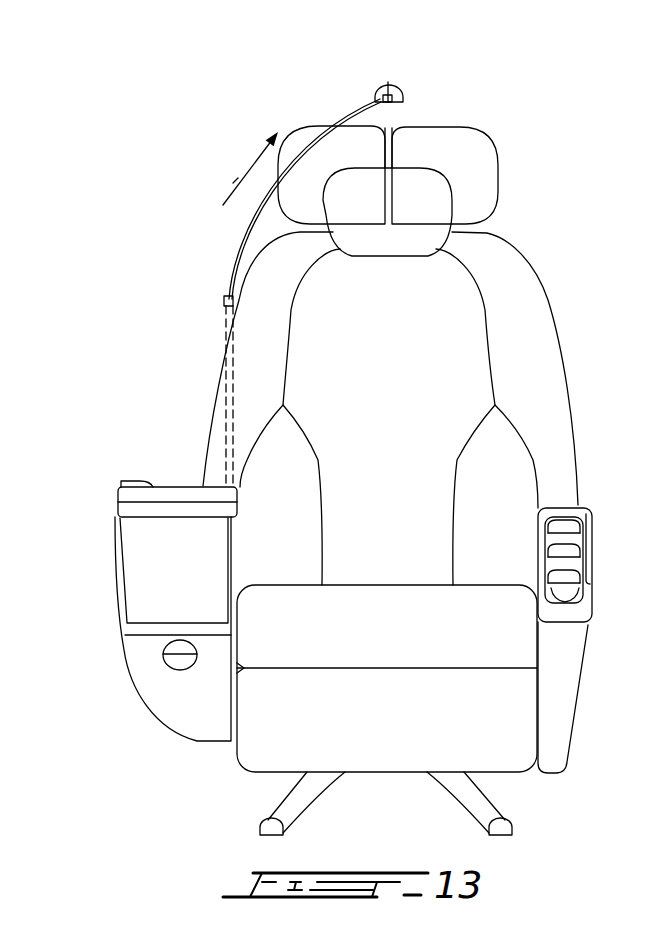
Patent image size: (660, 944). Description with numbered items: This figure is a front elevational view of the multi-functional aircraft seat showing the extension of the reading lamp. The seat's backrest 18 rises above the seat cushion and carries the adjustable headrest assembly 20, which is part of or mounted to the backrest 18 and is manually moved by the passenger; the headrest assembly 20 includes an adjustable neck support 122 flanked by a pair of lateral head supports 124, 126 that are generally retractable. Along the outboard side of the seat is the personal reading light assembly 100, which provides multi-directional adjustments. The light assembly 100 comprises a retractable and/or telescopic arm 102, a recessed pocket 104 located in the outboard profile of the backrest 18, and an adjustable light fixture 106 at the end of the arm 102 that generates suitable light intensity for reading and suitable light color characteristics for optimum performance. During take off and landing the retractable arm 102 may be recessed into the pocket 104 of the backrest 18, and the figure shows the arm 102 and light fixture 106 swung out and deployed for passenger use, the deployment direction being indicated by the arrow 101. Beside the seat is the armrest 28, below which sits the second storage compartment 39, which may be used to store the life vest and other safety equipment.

The backrest 18 is at (385, 325).
The headrest assembly 20 is at (505, 159).
The armrest 28 is at (118, 490).
The second storage compartment 39 is at (175, 696).
The personal reading light assembly 100 is at (320, 117).
The arrow 101 is at (233, 183).
The retractable arm 102 is at (243, 233).
The recessed pocket 104 is at (228, 385).
The adjustable light fixture 106 is at (403, 88).
The adjustable neck support 122 is at (407, 219).
The lateral head support 124 is at (317, 163).
The lateral head support 126 is at (440, 148).